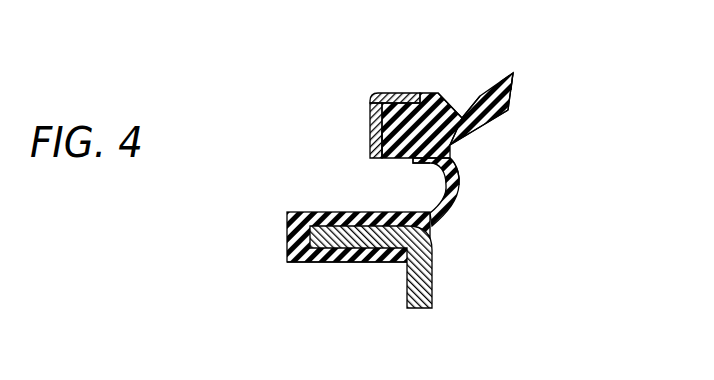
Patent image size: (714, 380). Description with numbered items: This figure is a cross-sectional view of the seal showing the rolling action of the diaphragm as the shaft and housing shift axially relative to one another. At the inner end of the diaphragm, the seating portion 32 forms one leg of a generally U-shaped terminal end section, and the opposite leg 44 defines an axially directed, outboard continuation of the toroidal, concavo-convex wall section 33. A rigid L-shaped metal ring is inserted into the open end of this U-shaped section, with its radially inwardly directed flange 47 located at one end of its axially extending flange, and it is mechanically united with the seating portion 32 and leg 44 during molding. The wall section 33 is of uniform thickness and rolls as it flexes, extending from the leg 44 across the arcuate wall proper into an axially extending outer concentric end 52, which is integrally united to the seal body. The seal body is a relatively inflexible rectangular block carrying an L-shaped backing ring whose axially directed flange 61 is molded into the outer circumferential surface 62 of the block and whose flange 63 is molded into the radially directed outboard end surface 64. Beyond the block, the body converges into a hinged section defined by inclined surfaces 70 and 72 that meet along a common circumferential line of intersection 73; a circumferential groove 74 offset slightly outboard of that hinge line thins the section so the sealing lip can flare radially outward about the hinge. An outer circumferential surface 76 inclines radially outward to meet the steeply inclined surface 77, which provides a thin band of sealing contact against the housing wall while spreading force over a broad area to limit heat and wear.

The seating portion 32 is at (320, 263).
The wall section 33 is at (459, 186).
The leg 44 is at (330, 212).
The radially inwardly directed flange 47 is at (433, 280).
The outer concentric end 52 is at (413, 163).
The axially directed flange 61 is at (400, 93).
The outer circumferential surface 62 is at (388, 93).
The flange 63 is at (370, 110).
The radially directed outboard end surface 64 is at (370, 138).
The inclined surface 70 is at (450, 134).
The inclined surface 72 is at (483, 124).
The line of intersection 73 is at (467, 132).
The groove 74 is at (462, 115).
The outer circumferential surface 76 is at (503, 76).
The radially outwardly directed surface 77 is at (515, 104).